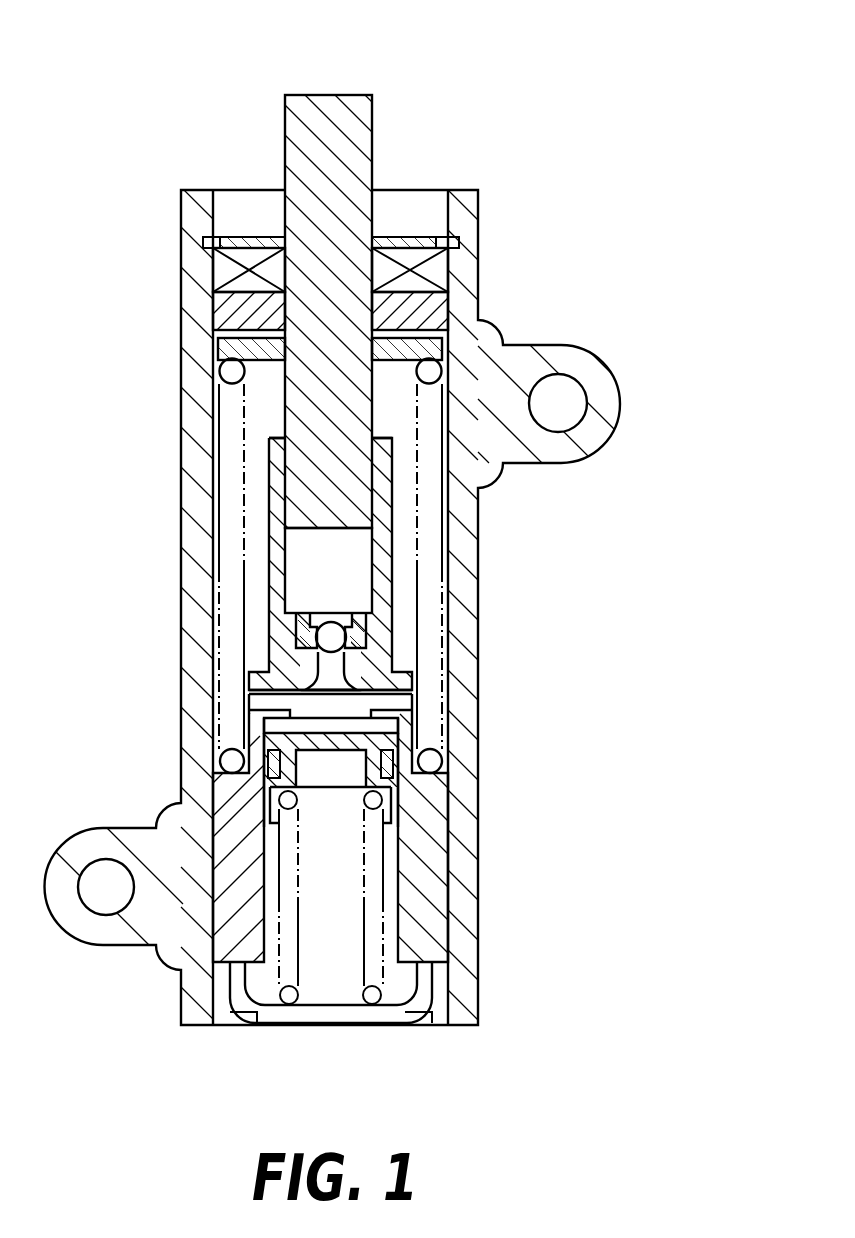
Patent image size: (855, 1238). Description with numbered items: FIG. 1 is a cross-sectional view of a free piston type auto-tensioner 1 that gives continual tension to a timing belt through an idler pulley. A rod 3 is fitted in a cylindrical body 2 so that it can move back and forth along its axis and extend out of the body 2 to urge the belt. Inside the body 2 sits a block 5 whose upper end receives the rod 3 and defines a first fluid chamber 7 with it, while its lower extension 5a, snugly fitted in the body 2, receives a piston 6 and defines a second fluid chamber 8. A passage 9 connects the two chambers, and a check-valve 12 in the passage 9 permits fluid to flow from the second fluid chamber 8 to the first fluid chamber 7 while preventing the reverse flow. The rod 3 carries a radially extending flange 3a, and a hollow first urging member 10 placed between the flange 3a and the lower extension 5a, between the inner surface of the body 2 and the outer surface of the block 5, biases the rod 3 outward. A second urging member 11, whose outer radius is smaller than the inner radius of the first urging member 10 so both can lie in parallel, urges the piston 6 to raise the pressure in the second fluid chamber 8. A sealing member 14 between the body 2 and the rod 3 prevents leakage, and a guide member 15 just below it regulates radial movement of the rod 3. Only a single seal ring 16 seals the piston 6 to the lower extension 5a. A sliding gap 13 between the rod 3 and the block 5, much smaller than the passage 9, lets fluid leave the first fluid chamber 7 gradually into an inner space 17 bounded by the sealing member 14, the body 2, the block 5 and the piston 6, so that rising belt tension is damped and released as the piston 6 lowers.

The auto-tensioner 1 is at (466, 55).
The cylindrical body 2 is at (472, 260).
The rod 3 is at (365, 133).
The flange 3a is at (435, 345).
The block 5 is at (383, 550).
The lower extension 5a is at (437, 805).
The piston 6 is at (367, 768).
The first fluid chamber 7 is at (322, 583).
The second fluid chamber 8 is at (282, 700).
The passage 9 is at (337, 660).
The first urging member 10 is at (233, 497).
The second urging member 11 is at (400, 878).
The check-valve 12 is at (306, 638).
The sliding gap 13 is at (264, 427).
The sealing member 14 is at (250, 255).
The guide member 15 is at (230, 315).
The seal ring 16 is at (268, 770).
The inner space 17 is at (255, 438).